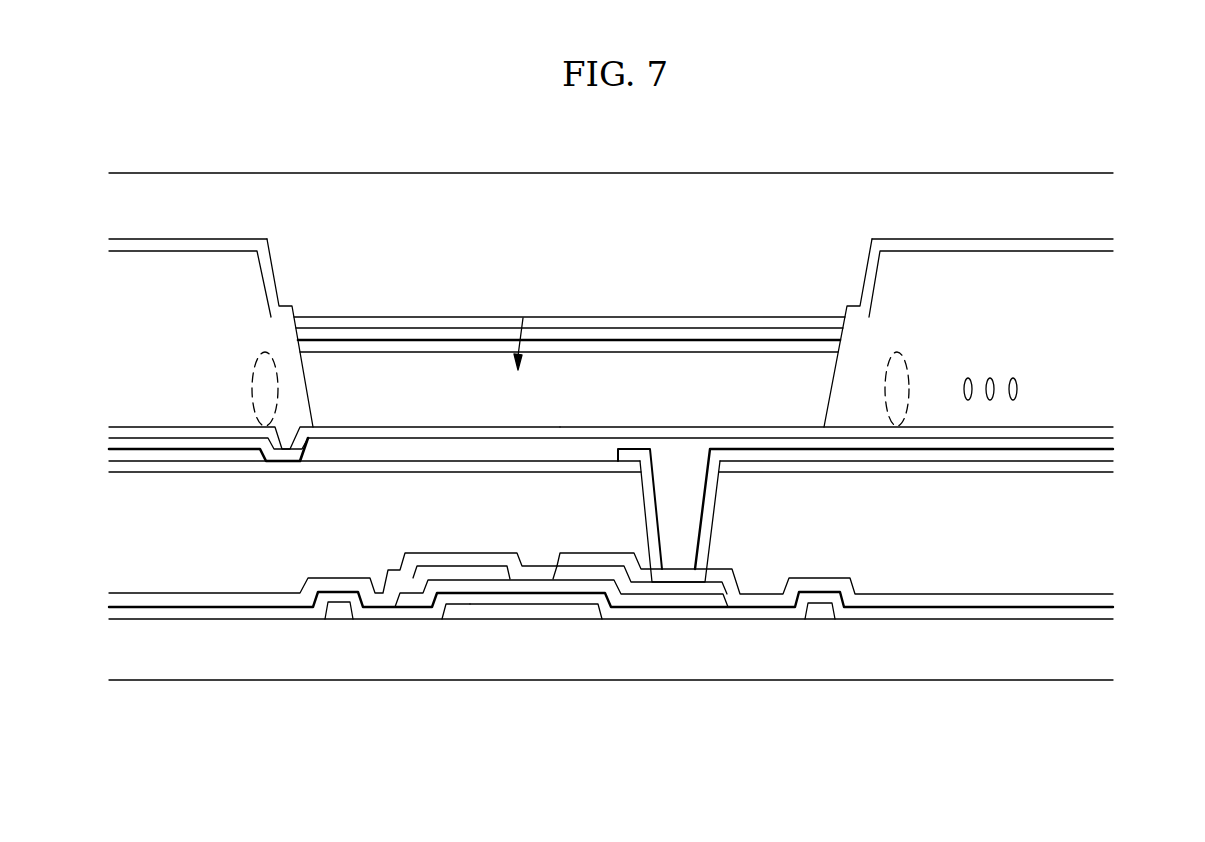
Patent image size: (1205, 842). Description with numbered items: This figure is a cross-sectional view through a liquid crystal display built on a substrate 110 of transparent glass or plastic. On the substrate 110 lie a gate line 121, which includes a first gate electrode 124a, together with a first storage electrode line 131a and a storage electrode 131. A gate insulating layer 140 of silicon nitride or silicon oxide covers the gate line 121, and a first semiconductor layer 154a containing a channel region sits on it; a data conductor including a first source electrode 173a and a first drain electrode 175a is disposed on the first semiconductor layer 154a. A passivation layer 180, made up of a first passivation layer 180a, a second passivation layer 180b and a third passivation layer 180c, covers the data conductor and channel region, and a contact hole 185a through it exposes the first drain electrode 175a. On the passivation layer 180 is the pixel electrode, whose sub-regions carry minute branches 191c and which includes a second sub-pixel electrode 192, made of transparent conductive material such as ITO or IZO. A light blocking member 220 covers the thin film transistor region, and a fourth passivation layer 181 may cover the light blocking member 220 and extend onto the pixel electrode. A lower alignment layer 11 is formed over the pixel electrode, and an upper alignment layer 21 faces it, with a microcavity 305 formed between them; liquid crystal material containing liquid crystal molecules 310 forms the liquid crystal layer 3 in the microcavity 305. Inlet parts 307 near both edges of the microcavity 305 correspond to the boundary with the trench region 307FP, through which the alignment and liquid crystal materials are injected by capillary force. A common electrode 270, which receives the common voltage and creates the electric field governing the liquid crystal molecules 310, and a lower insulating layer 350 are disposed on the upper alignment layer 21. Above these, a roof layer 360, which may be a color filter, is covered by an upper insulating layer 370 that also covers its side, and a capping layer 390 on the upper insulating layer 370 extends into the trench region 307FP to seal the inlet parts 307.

The capping layer 390 is at (1100, 203).
The upper insulating layer 370 is at (1100, 243).
The roof layer 360 is at (127, 281).
The lower insulating layer 350 is at (1100, 323).
The microcavity 305 is at (206, 386).
The inlet part 307 is at (278, 372).
The trench region 307FP is at (517, 328).
The common electrode 270 is at (1100, 335).
The upper alignment layer 21 is at (1100, 345).
The liquid crystal layer 3 is at (1100, 383).
The liquid crystal molecules 310 is at (1018, 388).
The lower alignment layer 11 is at (1100, 433).
The fourth passivation layer 181 is at (583, 427).
The light blocking member 220 is at (412, 438).
The minute branches 191c is at (1100, 454).
The second sub-pixel electrode 192 is at (913, 455).
The passivation layer 180 is at (650, 627).
The first passivation layer 180a is at (1100, 583).
The second passivation layer 180b is at (1100, 528).
The third passivation layer 180c is at (1088, 465).
The contact hole 185a is at (682, 467).
The first drain electrode 175a is at (598, 568).
The first source electrode 173a is at (492, 573).
The first semiconductor layer 154a is at (556, 582).
The gate insulating layer 140 is at (1100, 605).
The first gate electrode 124a is at (458, 608).
The gate line 121 is at (517, 607).
The first storage electrode line 131a is at (339, 608).
The storage electrode 131 is at (818, 608).
The substrate 110 is at (1100, 655).